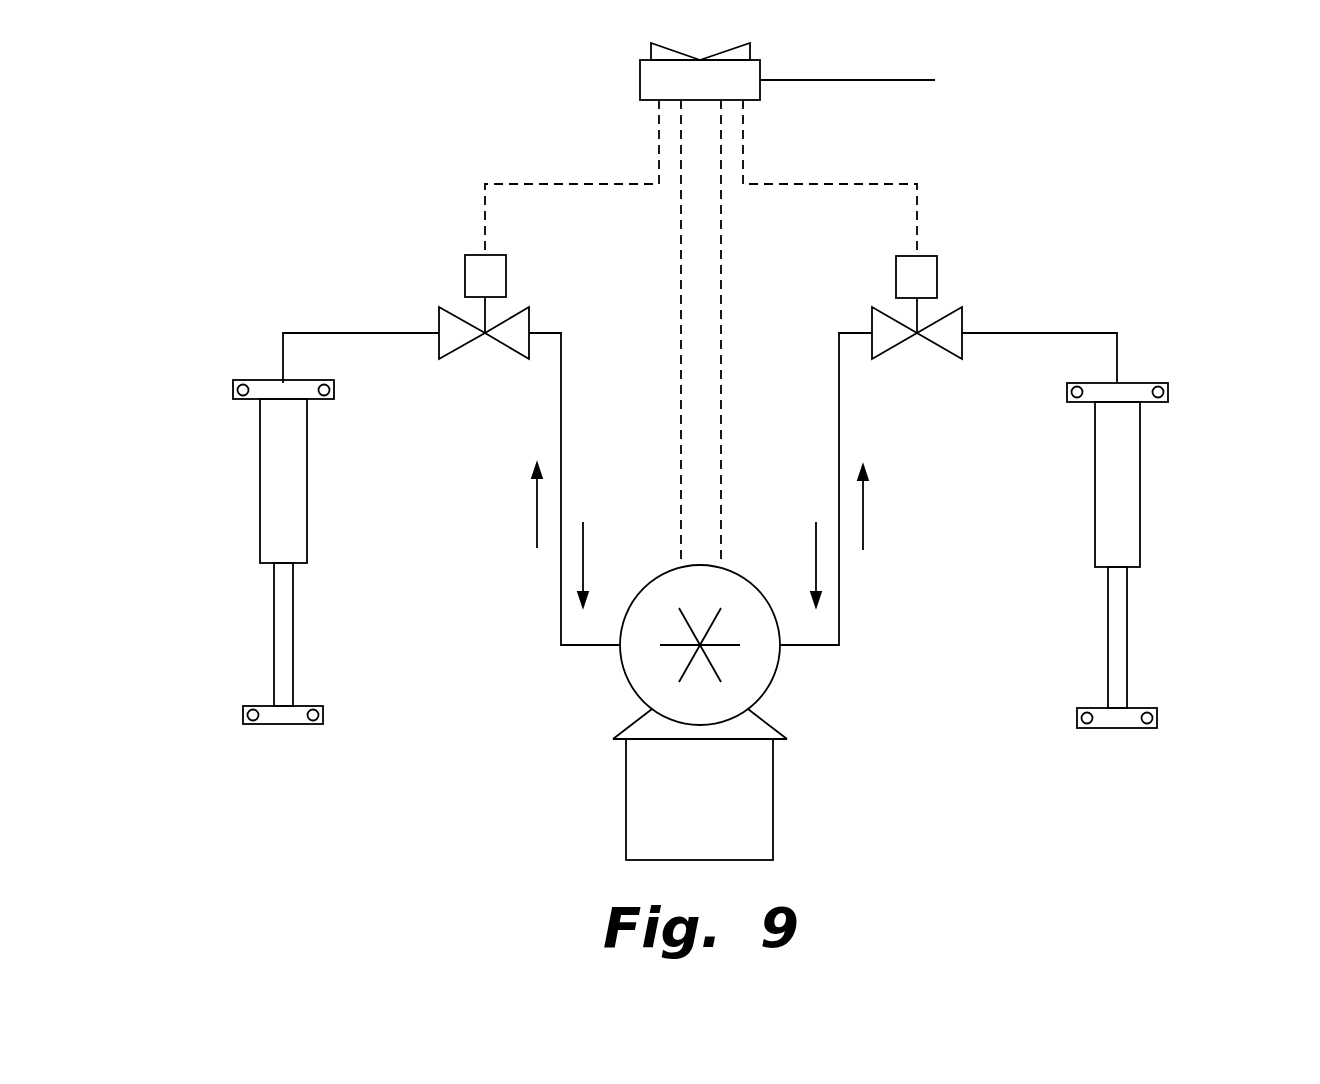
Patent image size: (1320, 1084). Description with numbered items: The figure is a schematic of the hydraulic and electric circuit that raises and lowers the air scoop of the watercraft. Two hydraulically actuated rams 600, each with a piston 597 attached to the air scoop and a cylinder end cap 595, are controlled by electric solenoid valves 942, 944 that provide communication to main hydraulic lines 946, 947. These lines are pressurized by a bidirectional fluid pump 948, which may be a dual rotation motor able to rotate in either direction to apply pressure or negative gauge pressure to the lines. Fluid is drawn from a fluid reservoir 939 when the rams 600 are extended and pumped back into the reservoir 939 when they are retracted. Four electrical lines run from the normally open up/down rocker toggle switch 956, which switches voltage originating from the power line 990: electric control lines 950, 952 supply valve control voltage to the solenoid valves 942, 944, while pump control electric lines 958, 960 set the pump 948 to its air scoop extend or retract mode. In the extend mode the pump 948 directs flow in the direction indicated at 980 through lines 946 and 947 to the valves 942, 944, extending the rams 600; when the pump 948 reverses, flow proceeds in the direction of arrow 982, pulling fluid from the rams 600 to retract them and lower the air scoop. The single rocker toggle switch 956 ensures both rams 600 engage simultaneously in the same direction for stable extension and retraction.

The rocker toggle switch 956 is at (671, 93).
The power line 990 is at (837, 81).
The electric control line 950 is at (537, 184).
The electric control line 952 is at (917, 184).
The pump control electric line 958 is at (681, 287).
The pump control electric line 960 is at (721, 287).
The electric valve 942 is at (440, 307).
The electric valve 944 is at (962, 307).
The main hydraulic line 946 is at (561, 415).
The main hydraulic line 947 is at (842, 422).
The flow direction 980 is at (535, 510).
The flow direction arrow 982 is at (585, 553).
The cylinder end cap 595 is at (233, 380).
The hydraulic ram 600 is at (260, 480).
The piston 597 is at (243, 707).
The bidirectional fluid pump 948 is at (772, 678).
The fluid reservoir 939 is at (773, 835).